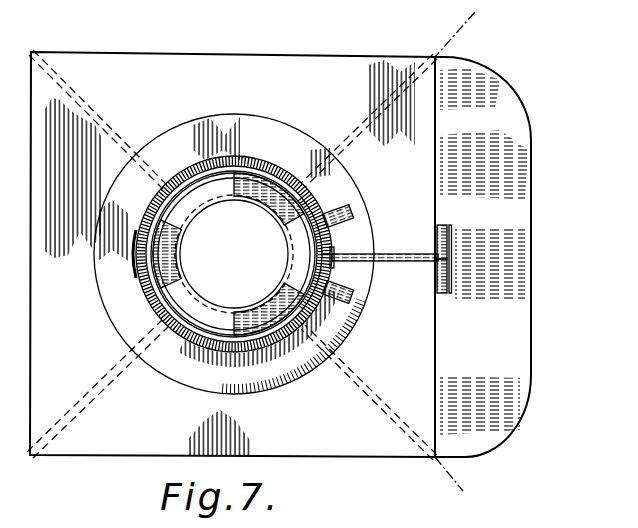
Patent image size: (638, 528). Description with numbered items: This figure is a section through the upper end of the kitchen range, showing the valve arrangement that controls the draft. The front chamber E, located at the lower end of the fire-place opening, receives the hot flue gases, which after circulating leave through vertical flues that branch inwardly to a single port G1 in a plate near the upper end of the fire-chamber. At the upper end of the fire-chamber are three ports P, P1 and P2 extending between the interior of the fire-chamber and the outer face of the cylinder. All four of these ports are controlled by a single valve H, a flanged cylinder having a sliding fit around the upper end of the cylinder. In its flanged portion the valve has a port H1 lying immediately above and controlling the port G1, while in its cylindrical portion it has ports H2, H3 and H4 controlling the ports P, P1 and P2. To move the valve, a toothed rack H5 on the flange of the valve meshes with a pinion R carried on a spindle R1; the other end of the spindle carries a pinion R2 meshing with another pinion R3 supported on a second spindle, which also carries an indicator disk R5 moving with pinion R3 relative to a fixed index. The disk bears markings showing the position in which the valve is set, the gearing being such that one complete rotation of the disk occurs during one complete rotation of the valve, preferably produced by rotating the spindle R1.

The front chamber E is at (488, 97).
The valve H is at (220, 180).
The port in the valve H1 is at (333, 220).
The port in the valve H2 is at (283, 180).
The port in the valve H3 is at (302, 350).
The port in the valve H4 is at (138, 277).
The toothed rack H5 is at (257, 160).
The port P is at (205, 305).
The port P1 is at (210, 193).
The port P2 is at (343, 290).
The port in the plate G1 is at (345, 210).
The pinion R is at (337, 242).
The spindle R1 is at (350, 262).
The pinion R2 is at (448, 247).
The pinion R3 is at (445, 291).
The indicator disk R5 is at (450, 267).